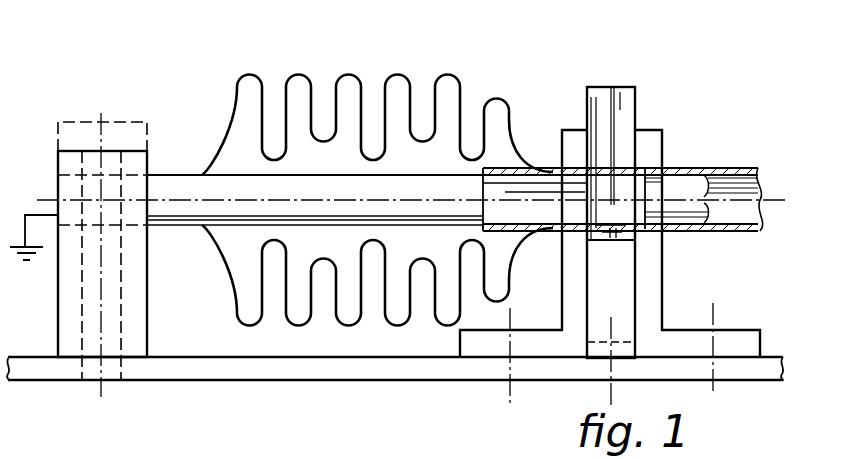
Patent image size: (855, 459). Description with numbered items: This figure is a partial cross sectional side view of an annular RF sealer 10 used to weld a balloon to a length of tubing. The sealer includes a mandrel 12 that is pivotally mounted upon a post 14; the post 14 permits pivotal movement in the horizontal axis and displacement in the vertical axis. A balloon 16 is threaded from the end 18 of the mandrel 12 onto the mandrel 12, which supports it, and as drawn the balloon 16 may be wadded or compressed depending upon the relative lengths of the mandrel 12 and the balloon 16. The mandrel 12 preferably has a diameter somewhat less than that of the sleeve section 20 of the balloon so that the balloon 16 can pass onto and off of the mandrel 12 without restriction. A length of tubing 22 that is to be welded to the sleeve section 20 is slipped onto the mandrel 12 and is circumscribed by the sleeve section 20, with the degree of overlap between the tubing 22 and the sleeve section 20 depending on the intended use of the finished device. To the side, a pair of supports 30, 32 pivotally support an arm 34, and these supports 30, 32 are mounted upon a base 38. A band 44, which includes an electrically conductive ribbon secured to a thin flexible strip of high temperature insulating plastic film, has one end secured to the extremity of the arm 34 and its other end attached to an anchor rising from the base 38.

The annular sealer 10 is at (429, 423).
The mandrel 12 is at (170, 175).
The post 14 is at (58, 330).
The balloon 16 is at (300, 73).
The end of the mandrel 18 is at (718, 177).
The sleeve section 20 is at (637, 168).
The tubing 22 is at (743, 168).
The support 30 is at (663, 281).
The support 32 is at (562, 294).
The arm 34 is at (602, 87).
The base 38 is at (205, 357).
The band 44 is at (230, 456).